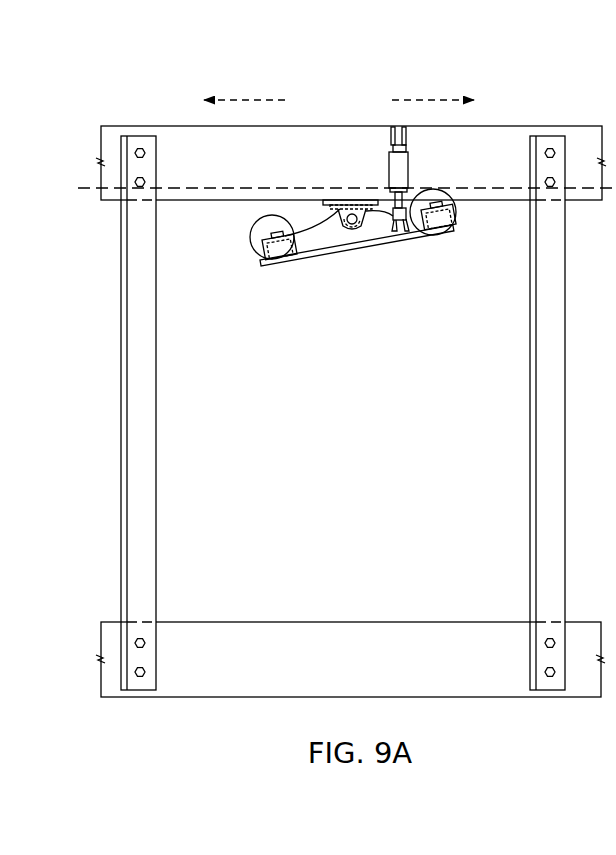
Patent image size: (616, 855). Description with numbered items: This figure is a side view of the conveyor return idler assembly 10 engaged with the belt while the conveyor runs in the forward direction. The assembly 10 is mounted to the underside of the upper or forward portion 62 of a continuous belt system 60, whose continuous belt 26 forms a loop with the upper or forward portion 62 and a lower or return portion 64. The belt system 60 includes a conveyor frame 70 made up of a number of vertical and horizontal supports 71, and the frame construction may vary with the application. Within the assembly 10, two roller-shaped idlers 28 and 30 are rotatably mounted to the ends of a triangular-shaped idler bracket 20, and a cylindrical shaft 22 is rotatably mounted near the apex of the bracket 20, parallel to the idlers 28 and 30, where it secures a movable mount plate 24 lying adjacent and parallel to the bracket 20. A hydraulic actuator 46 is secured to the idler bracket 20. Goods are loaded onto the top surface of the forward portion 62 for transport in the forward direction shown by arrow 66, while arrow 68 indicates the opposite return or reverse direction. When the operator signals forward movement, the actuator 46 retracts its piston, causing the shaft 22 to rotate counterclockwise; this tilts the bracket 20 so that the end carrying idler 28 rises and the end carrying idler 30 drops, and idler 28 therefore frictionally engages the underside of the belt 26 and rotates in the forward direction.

The conveyor return idler assembly 10 is at (279, 280).
The idler bracket 20 is at (303, 247).
The shaft 22 is at (353, 228).
The movable mount plate 24 is at (338, 200).
The continuous conveyor belt 26 is at (493, 187).
The idler 28 is at (457, 213).
The idler 30 is at (243, 237).
The hydraulic actuator 46 is at (380, 153).
The continuous belt system 60 is at (121, 100).
The upper or forward portion 62 is at (195, 165).
The lower or return portion 64 is at (212, 670).
The forward direction arrow 66 is at (433, 100).
The reverse direction arrow 68 is at (243, 100).
The conveyor frame 70 is at (100, 351).
The supports 71 is at (147, 419).